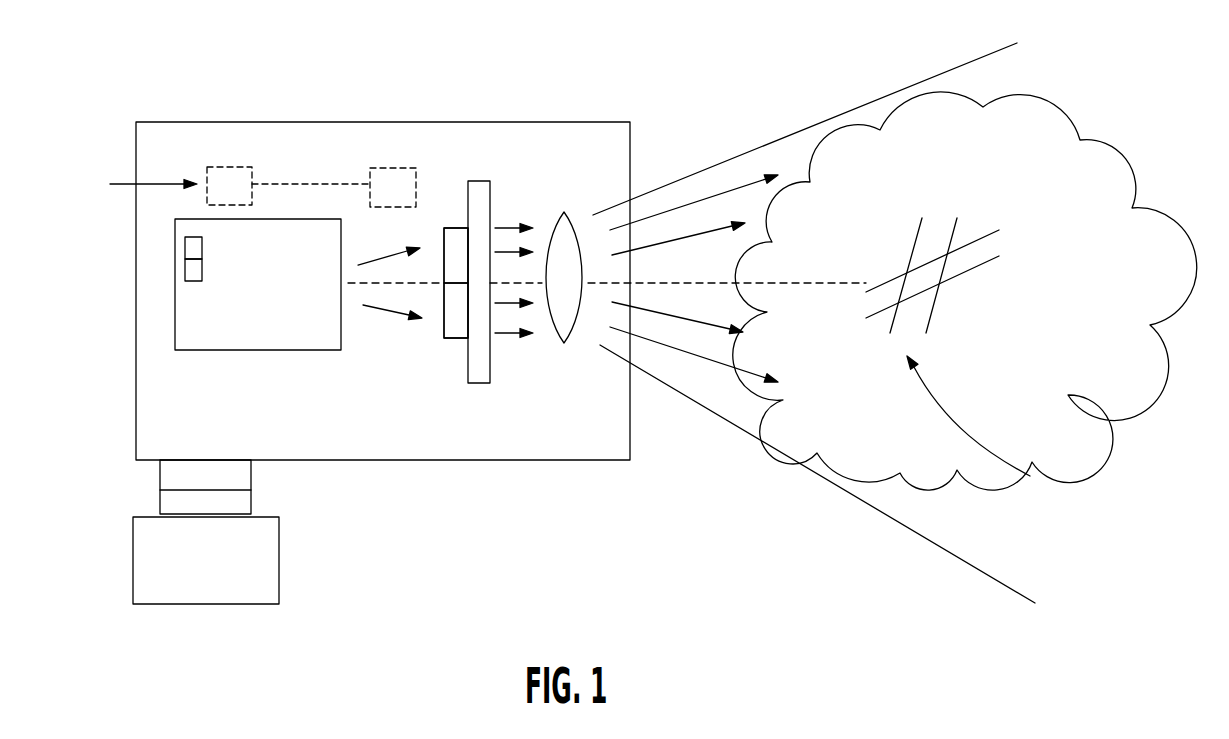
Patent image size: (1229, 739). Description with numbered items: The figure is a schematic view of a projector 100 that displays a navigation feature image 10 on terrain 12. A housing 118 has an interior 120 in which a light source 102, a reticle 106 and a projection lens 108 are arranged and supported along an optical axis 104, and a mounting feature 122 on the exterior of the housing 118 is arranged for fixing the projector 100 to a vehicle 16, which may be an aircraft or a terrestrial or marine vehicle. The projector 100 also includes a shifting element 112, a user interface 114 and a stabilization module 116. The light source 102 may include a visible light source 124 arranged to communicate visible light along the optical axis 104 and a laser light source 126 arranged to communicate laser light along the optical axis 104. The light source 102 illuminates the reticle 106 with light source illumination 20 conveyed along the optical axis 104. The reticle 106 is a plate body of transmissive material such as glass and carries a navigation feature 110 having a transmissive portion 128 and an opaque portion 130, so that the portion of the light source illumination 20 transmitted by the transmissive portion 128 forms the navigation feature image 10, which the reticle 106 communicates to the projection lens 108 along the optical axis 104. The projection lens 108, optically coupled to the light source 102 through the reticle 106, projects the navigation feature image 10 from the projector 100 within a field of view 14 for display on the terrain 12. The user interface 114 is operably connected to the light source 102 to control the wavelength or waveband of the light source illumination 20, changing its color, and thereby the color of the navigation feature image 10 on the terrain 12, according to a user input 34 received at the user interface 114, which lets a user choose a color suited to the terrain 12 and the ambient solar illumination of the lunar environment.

The navigation feature image 10 is at (515, 338).
The terrain 12 is at (1095, 140).
The field of view 14 is at (778, 138).
The vehicle 16 is at (228, 583).
The light source illumination 20 is at (383, 312).
The user input 34 is at (160, 184).
The projector 100 is at (302, 624).
The light source 102 is at (215, 351).
The optical axis 104 is at (667, 278).
The reticle 106 is at (487, 182).
The projection lens 108 is at (552, 335).
The navigation feature 110 is at (453, 338).
The shifting element 112 is at (415, 170).
The user interface 114 is at (232, 167).
The stabilization module 116 is at (252, 495).
The housing 118 is at (420, 462).
The interior 120 is at (605, 176).
The mounting feature 122 is at (160, 473).
The visible light source 124 is at (186, 243).
The laser light source 126 is at (195, 283).
The transmissive portion 128 is at (457, 258).
The opaque portion 130 is at (453, 322).